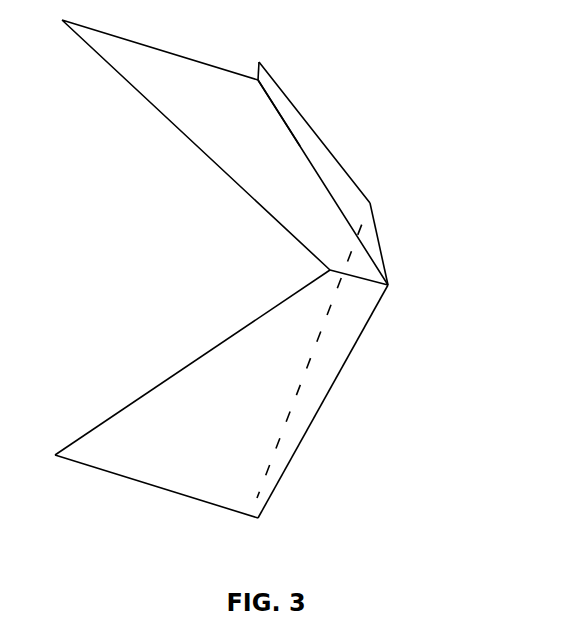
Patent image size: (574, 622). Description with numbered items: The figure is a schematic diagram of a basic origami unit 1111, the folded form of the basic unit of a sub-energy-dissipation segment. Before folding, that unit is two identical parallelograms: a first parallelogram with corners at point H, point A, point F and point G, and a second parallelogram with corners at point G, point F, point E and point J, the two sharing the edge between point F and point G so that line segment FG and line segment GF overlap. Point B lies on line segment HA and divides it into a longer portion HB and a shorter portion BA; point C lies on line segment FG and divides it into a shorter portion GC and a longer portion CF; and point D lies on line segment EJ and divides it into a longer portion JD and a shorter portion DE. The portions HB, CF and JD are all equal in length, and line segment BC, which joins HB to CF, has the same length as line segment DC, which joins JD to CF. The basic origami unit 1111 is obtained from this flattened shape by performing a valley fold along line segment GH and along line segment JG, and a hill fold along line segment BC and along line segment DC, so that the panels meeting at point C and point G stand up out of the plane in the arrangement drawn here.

The basic origami unit 1111 is at (310, 128).
The point H is at (185, 145).
The point A is at (268, 63).
The point B is at (259, 113).
The point F is at (379, 230).
The point G is at (341, 272).
The point C is at (335, 398).
The point J is at (174, 371).
The point D is at (177, 498).
The point E is at (302, 361).